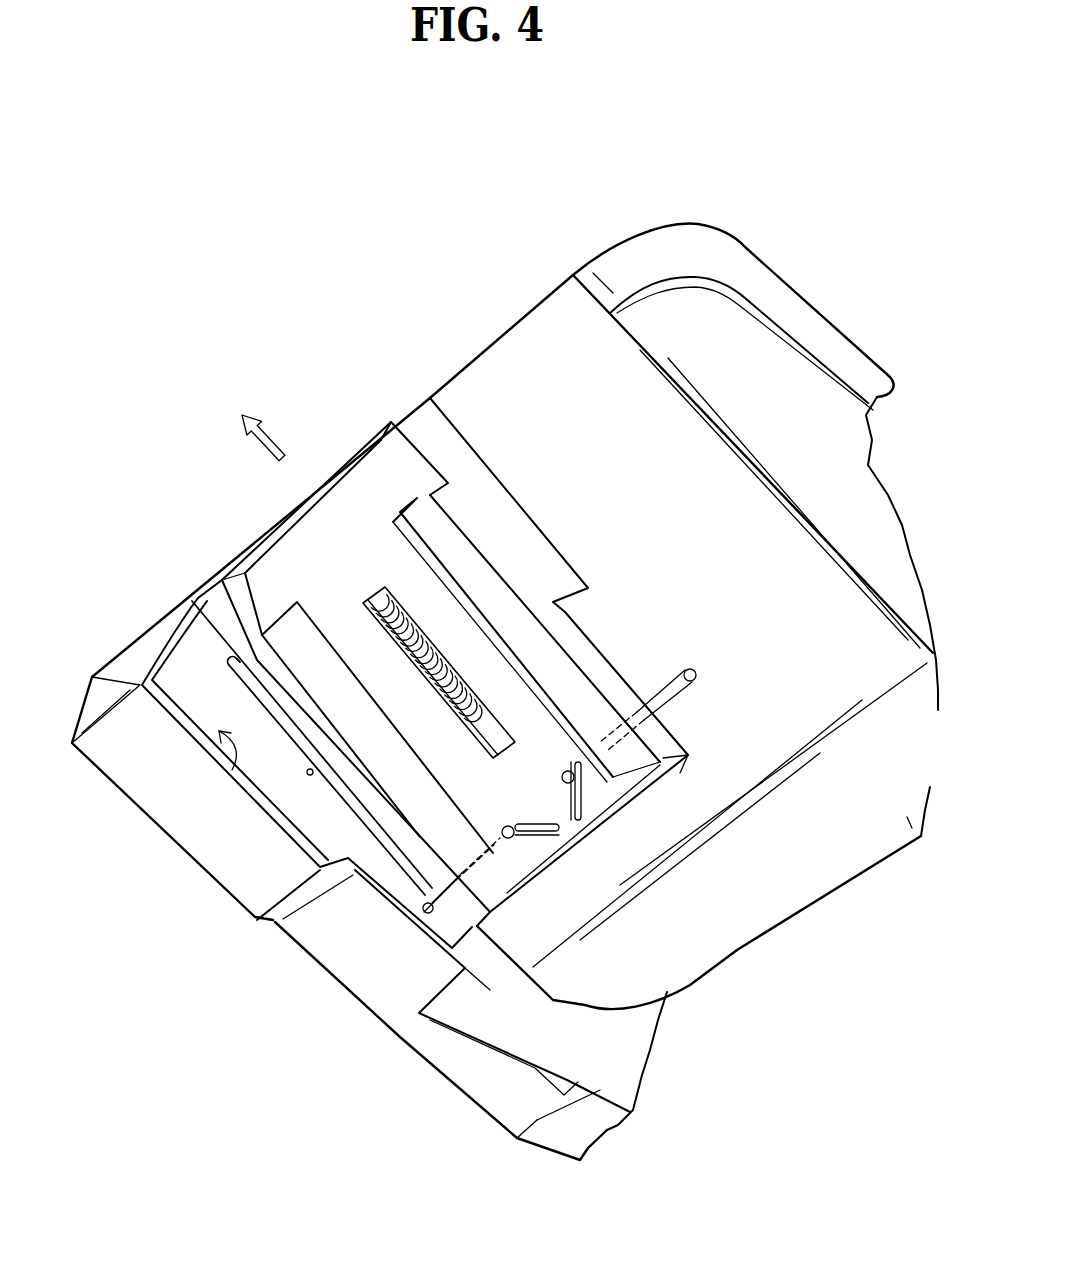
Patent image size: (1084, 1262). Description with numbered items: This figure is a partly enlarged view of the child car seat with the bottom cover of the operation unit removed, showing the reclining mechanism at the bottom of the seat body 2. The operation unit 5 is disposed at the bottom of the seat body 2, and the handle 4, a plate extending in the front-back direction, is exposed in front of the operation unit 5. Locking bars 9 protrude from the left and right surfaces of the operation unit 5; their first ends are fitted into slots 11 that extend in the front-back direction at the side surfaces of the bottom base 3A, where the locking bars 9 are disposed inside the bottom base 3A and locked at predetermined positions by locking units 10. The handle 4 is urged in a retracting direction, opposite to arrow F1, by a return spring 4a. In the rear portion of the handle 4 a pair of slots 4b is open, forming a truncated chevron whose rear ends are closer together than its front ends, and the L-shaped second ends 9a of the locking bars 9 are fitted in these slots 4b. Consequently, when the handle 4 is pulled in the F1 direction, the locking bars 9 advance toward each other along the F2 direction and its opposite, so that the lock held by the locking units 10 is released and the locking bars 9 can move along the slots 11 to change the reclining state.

The seat body 2 is at (793, 267).
The bottom base 3A is at (240, 892).
The handle 4 is at (307, 535).
The return spring 4a is at (423, 634).
The slots 4b is at (562, 788).
The operation unit 5 is at (563, 673).
The locking bars 9 is at (694, 680).
The second ends 9a is at (570, 771).
The locking units 10 is at (227, 768).
The slots 11 is at (308, 775).
The F1 direction F1 is at (262, 433).
The F2 direction F2 is at (652, 667).